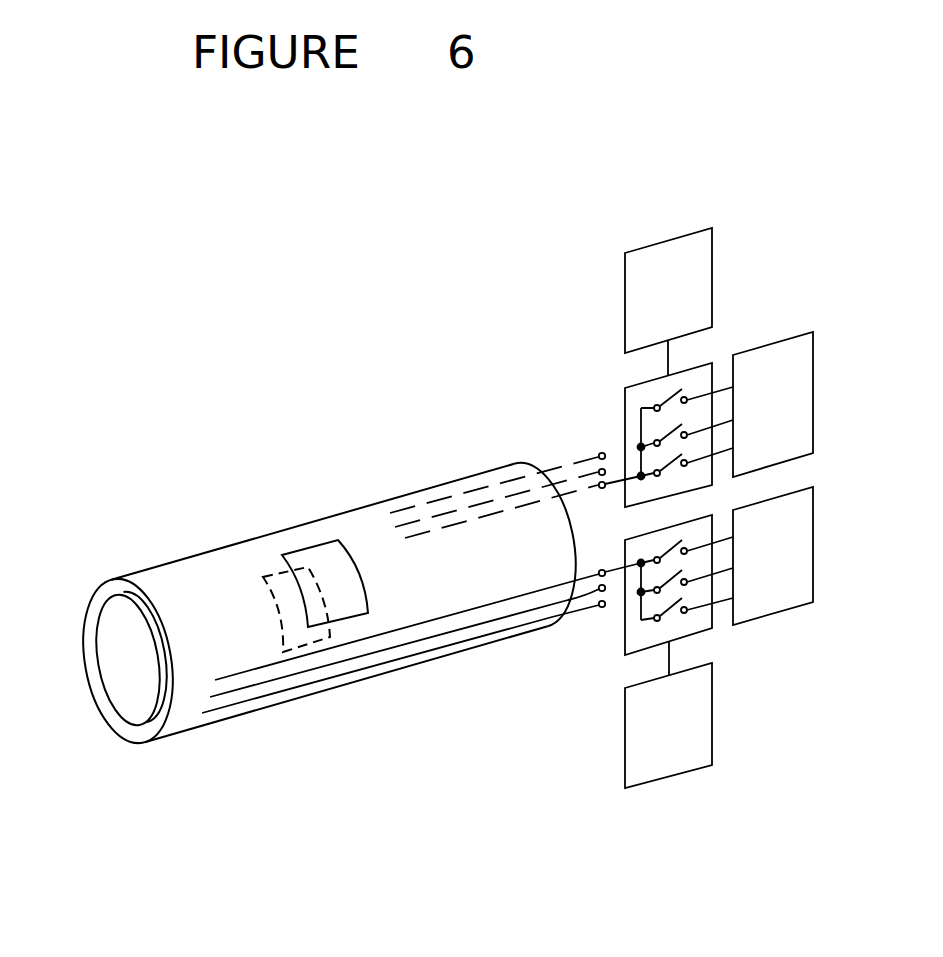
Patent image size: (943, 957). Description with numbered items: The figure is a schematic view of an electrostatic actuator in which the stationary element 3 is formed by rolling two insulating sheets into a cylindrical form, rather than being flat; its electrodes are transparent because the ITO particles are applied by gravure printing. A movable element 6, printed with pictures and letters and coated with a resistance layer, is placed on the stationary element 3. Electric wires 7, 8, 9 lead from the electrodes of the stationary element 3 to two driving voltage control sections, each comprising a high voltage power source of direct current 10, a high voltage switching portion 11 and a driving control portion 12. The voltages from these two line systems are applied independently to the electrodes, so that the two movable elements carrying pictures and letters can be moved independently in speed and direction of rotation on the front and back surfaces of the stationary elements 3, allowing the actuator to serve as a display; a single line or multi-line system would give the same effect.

The stationary element 3 is at (92, 600).
The movable element 6 is at (277, 568).
The electric wire 7 is at (571, 613).
The electric wire 8 is at (585, 613).
The electric wire 9 is at (594, 610).
The high voltage power source of direct current 10 is at (793, 372).
The high voltage switching portion 11 is at (698, 363).
The driving control portion 12 is at (698, 253).